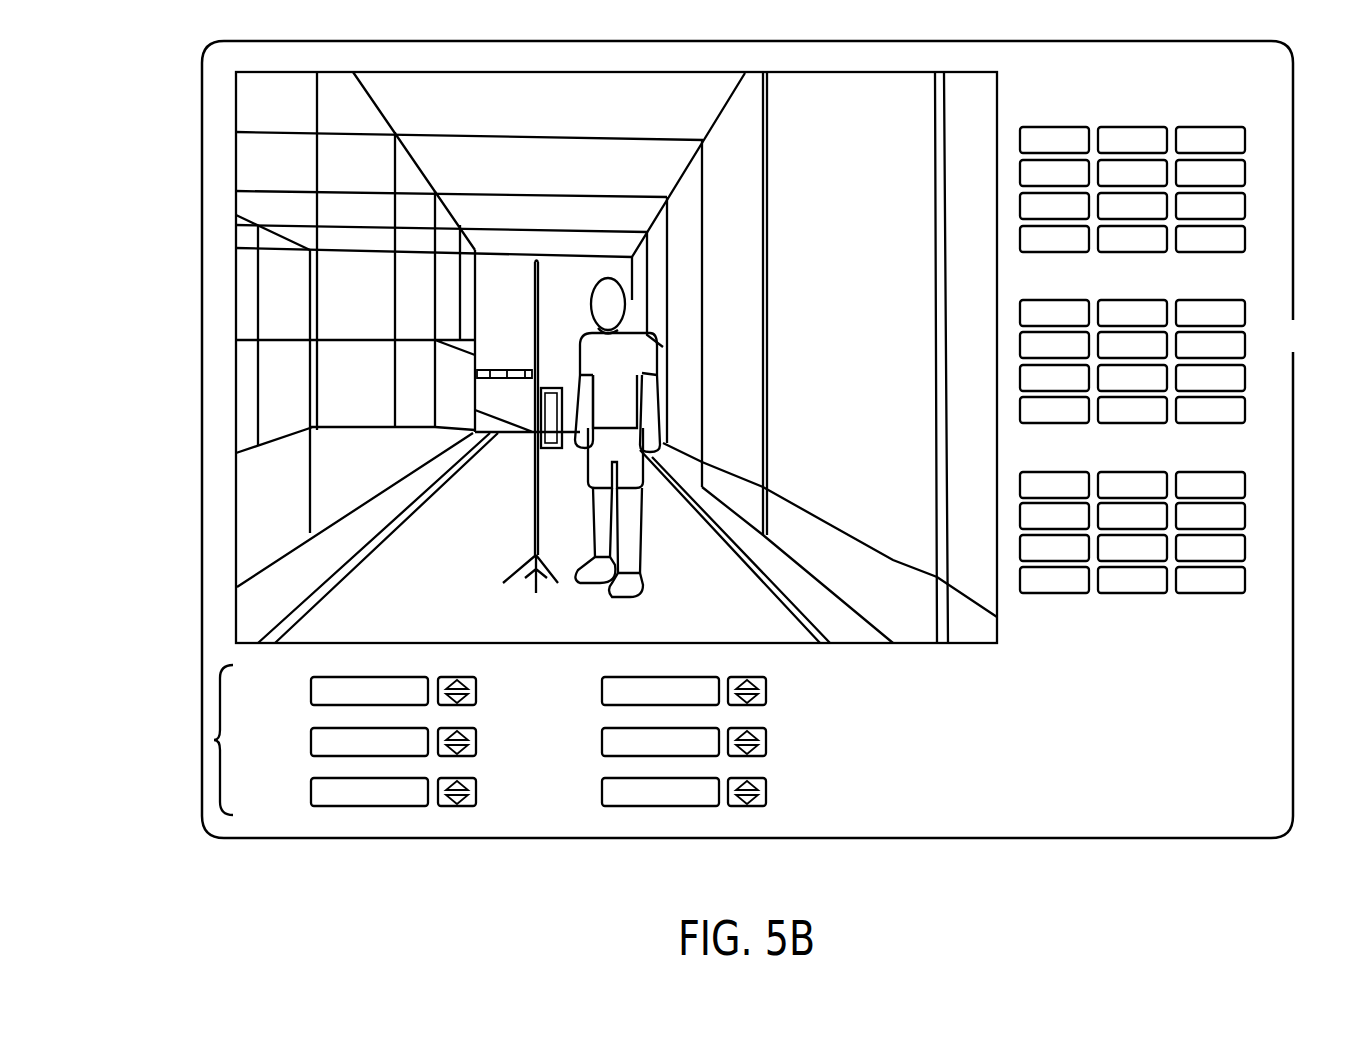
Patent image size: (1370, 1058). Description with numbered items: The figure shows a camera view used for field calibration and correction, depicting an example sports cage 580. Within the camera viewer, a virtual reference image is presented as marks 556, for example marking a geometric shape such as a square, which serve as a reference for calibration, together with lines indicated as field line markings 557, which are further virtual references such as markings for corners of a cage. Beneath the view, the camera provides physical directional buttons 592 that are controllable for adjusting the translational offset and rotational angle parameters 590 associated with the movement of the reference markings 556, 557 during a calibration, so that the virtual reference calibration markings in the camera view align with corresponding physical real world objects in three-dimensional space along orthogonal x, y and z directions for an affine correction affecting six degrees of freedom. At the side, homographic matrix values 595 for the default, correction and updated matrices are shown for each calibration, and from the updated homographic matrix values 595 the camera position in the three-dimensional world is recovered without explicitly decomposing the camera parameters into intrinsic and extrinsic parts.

The sports cage 580 is at (497, 222).
The marks 556 is at (548, 387).
The field line markings 557 is at (427, 497).
The homographic matrix values 595 is at (1253, 605).
The translational and rotational parameters 590 is at (773, 665).
The physical directional buttons 592 is at (452, 818).